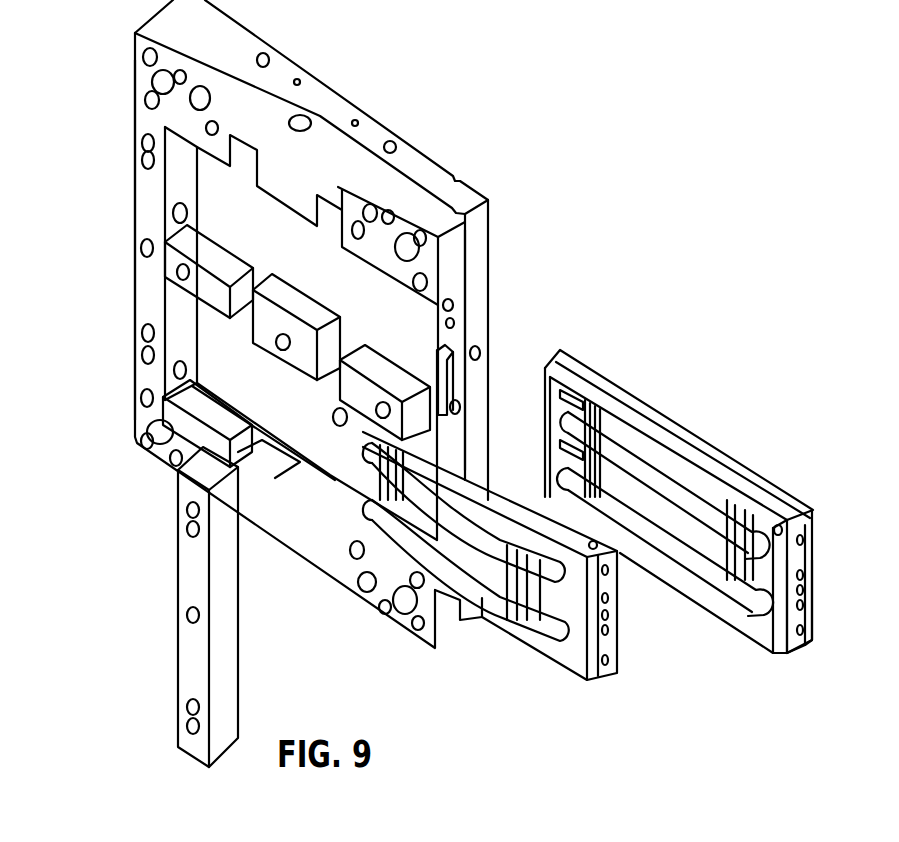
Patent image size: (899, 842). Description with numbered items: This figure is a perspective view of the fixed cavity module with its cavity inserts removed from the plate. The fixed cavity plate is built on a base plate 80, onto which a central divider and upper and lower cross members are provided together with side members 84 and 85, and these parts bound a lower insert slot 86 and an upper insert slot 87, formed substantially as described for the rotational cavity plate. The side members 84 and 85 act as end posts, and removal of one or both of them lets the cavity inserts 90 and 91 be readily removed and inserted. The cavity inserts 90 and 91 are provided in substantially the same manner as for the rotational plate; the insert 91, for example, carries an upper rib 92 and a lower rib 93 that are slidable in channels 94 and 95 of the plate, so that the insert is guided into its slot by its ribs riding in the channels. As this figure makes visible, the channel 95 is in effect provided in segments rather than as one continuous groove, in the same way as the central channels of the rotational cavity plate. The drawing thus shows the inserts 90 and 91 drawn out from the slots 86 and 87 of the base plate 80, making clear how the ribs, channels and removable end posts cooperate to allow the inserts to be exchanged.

The base plate 80 is at (313, 103).
The side member 84 is at (150, 289).
The side member 85 is at (220, 655).
The lower insert slot 86 is at (303, 385).
The upper insert slot 87 is at (393, 295).
The cavity insert 90 is at (518, 624).
The cavity insert 91 is at (680, 453).
The upper rib 92 is at (660, 408).
The lower rib 93 is at (800, 643).
The channel 94 is at (465, 287).
The channel 95 is at (430, 394).